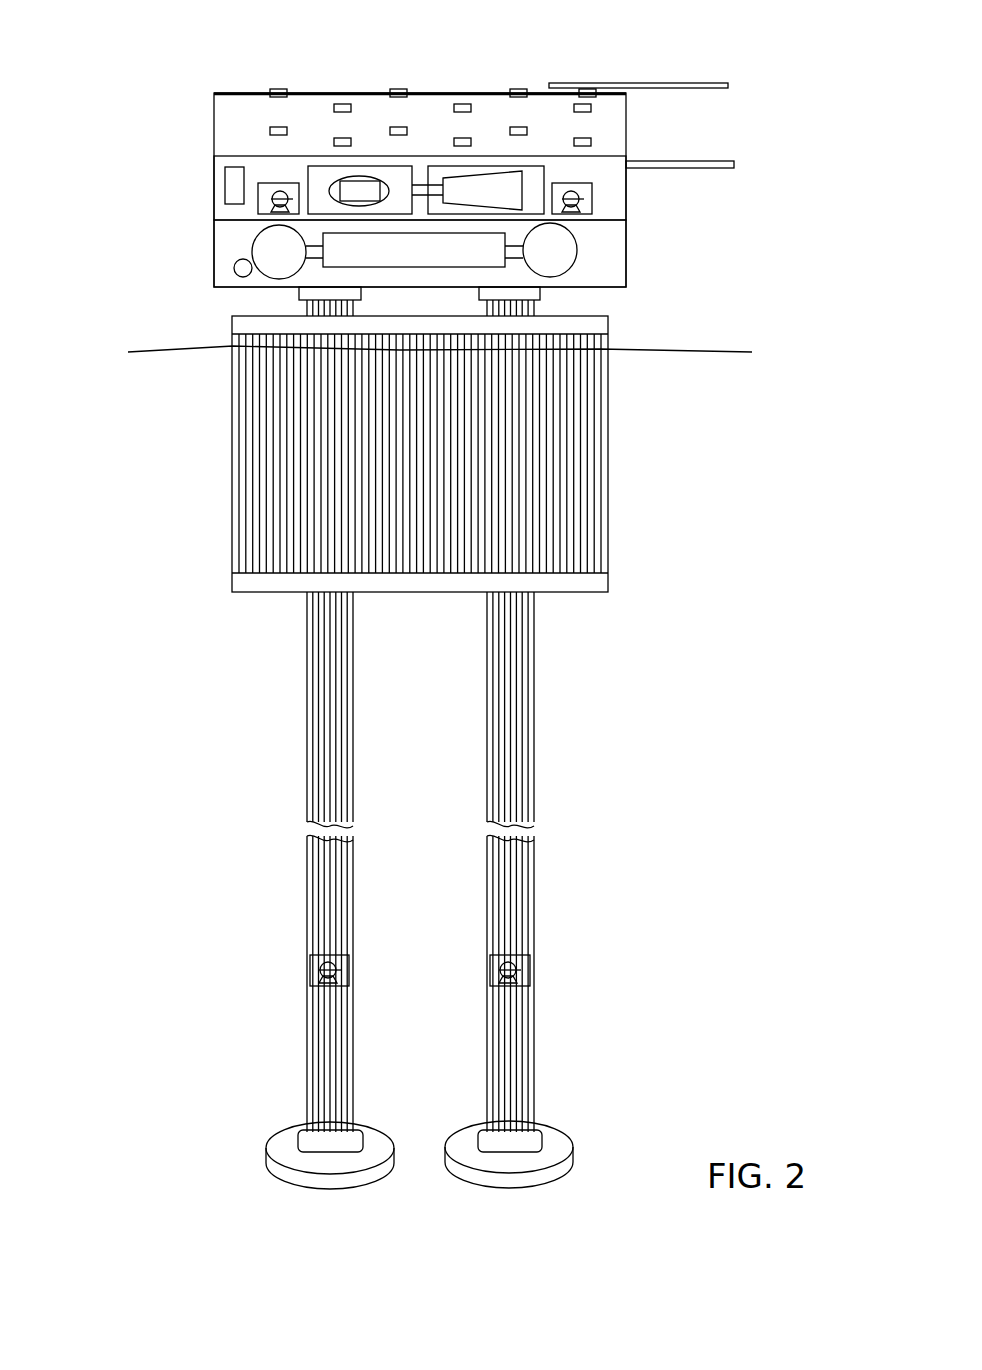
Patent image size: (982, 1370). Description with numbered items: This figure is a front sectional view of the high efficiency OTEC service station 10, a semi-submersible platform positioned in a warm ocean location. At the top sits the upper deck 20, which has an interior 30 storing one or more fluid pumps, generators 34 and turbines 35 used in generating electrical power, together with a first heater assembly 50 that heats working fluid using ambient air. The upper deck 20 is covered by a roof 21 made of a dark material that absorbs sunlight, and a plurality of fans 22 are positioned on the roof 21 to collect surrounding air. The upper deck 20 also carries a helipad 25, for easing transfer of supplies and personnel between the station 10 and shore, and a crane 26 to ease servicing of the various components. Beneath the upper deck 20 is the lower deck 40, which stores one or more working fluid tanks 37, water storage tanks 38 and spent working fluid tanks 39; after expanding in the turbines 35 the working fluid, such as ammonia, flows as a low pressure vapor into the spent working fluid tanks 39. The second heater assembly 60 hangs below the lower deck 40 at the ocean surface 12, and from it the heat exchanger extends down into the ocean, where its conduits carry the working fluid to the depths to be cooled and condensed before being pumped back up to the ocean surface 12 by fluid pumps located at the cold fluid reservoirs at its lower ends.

The OTEC service station 10 is at (152, 452).
The ocean surface 12 is at (667, 352).
The upper deck 20 is at (212, 162).
The roof 21 is at (452, 93).
The fans 22 is at (397, 88).
The helipad 25 is at (702, 83).
The crane 26 is at (723, 161).
The interior 30 is at (233, 213).
The generator 34 is at (335, 183).
The turbine 35 is at (523, 178).
The working fluid tank 37 is at (577, 240).
The water storage tank 38 is at (362, 252).
The spent working fluid tank 39 is at (253, 248).
The lower deck 40 is at (627, 268).
The first heater assembly 50 is at (225, 183).
The second heater assembly 60 is at (608, 487).